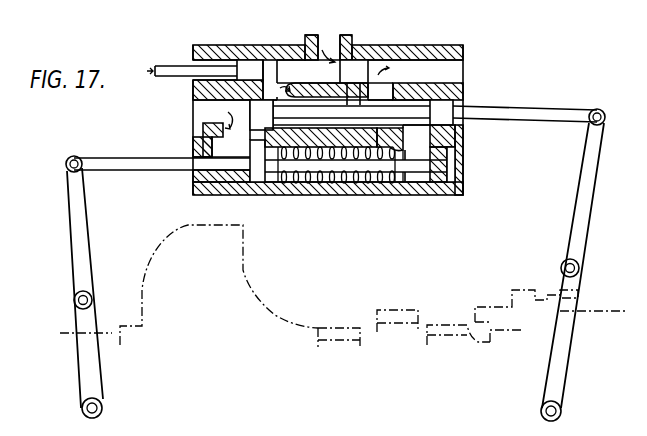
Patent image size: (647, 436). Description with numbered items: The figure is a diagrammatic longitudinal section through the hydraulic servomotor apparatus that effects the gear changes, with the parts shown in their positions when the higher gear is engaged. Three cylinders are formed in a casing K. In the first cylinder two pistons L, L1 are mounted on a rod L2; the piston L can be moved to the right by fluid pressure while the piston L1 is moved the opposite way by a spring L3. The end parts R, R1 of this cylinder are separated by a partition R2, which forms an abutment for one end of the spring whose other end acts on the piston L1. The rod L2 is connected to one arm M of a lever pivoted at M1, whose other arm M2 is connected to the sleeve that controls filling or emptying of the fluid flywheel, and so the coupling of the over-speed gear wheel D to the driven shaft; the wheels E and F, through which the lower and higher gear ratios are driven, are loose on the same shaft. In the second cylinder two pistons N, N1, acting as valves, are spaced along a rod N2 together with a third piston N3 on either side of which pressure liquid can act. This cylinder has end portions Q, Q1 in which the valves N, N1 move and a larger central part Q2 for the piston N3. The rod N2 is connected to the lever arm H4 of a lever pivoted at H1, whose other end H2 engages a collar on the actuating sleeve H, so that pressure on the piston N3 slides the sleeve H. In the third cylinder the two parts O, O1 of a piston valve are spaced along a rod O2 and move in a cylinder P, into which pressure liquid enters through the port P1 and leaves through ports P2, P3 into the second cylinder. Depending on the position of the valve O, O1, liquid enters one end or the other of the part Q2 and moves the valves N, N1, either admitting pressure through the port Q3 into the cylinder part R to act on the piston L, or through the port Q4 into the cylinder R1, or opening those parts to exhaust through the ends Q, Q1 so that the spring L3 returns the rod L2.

The casing K is at (387, 48).
The rod O2 is at (180, 72).
The piston valve part O1 is at (247, 68).
The port P3 is at (268, 90).
The port P1 is at (320, 57).
The piston valve part O is at (355, 70).
The cylinder P is at (387, 66).
The port P2 is at (377, 90).
The end portion of second cylinder Q is at (417, 103).
The piston valve N is at (438, 110).
The rod N2 is at (562, 117).
The end portion of second cylinder Q1 is at (205, 118).
The port Q4 is at (194, 135).
The piston valve N1 is at (258, 117).
The rod L2 is at (137, 170).
The piston L1 is at (252, 180).
The central part of second cylinder Q2 is at (312, 130).
The partition R2 is at (397, 172).
The spring L3 is at (357, 132).
The piston N3 is at (384, 132).
The piston L is at (434, 174).
The port Q3 is at (418, 142).
The end part of first cylinder R is at (452, 167).
The lever arm M is at (75, 197).
The lever pivot M1 is at (74, 300).
The lever arm M2 is at (82, 410).
The lever arm H4 is at (588, 157).
The lever pivot H1 is at (579, 268).
The lever arm end H2 is at (561, 412).
The end part of first cylinder R1 is at (228, 182).
The gear wheel D is at (350, 333).
The gear wheel E is at (400, 320).
The gear wheel F is at (455, 333).
The actuating sleeve H is at (527, 300).